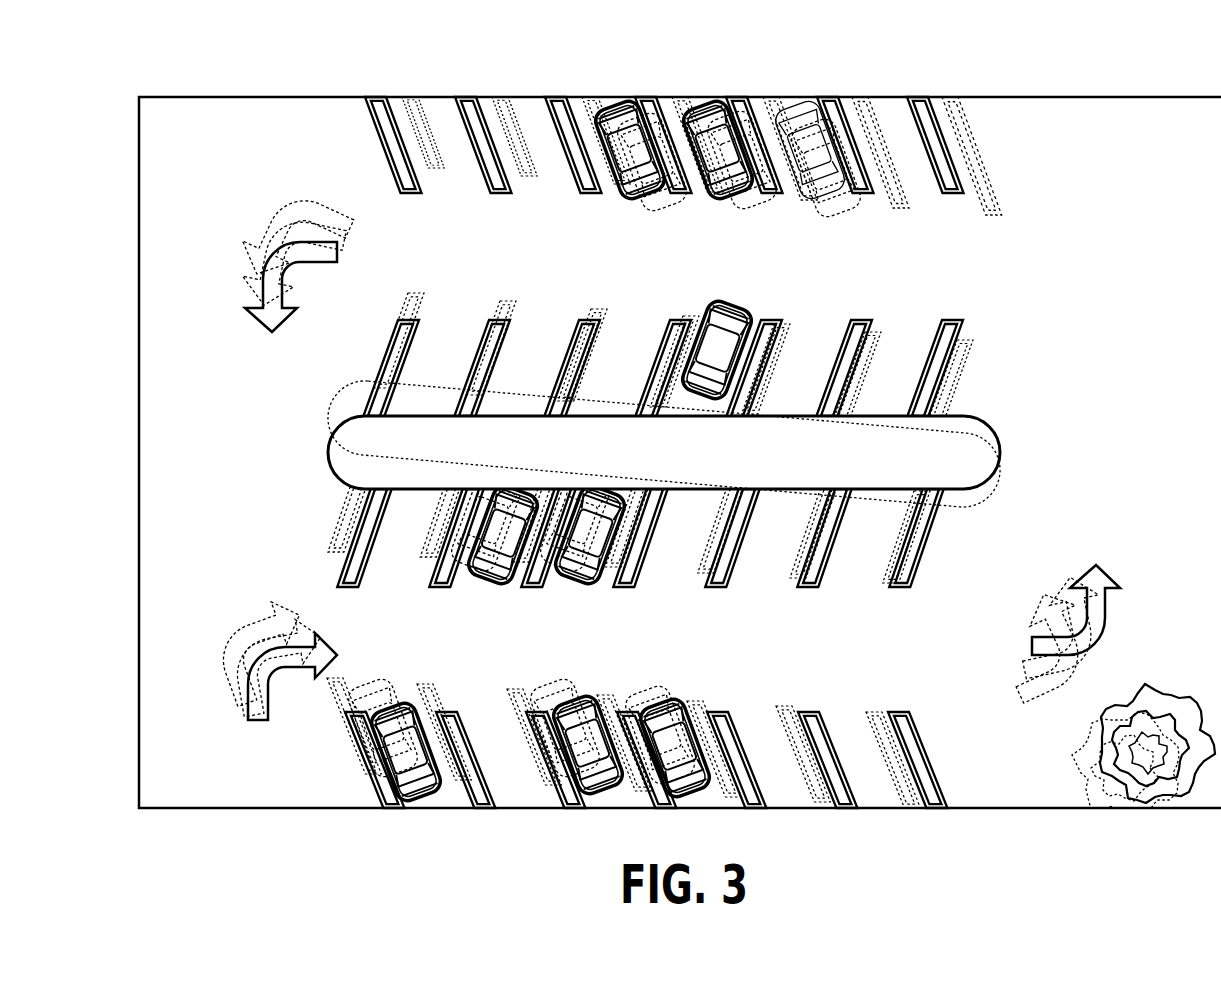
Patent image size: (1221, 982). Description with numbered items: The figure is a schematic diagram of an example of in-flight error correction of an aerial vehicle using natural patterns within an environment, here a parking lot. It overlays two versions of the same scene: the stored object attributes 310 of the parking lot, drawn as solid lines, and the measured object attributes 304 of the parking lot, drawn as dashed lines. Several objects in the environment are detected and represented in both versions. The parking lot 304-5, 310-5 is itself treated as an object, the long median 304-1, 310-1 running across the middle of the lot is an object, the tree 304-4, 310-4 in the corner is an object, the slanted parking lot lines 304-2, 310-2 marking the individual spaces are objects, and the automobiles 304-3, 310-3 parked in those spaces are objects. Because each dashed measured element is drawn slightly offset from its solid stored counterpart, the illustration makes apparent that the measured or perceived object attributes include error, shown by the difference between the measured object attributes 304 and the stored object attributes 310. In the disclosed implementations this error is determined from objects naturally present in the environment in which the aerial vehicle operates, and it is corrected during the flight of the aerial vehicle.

The measured object attributes 304 is at (1083, 60).
The median 304-1 is at (352, 385).
The parking lot lines 304-2 is at (348, 512).
The automobiles 304-3 is at (757, 205).
The tree 304-4 is at (1082, 782).
The parking lot 304-5 is at (792, 654).
The stored object attributes 310 is at (137, 305).
The median 310-1 is at (328, 458).
The parking lot lines 310-2 is at (352, 560).
The automobiles 310-3 is at (718, 200).
The tree 310-4 is at (1178, 690).
The parking lot 310-5 is at (670, 654).